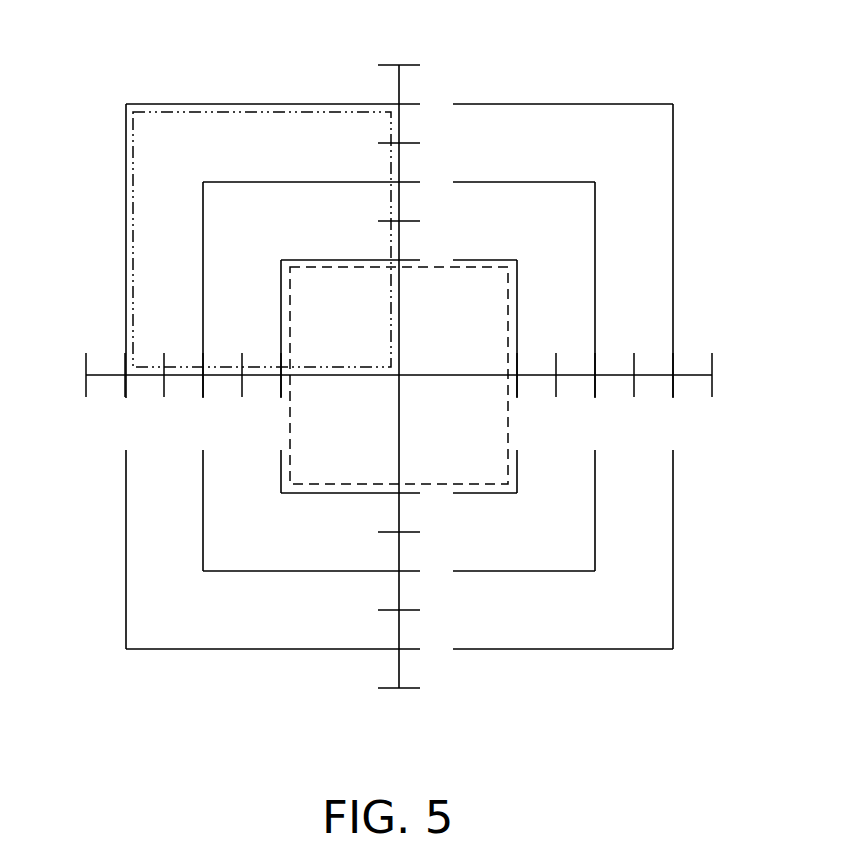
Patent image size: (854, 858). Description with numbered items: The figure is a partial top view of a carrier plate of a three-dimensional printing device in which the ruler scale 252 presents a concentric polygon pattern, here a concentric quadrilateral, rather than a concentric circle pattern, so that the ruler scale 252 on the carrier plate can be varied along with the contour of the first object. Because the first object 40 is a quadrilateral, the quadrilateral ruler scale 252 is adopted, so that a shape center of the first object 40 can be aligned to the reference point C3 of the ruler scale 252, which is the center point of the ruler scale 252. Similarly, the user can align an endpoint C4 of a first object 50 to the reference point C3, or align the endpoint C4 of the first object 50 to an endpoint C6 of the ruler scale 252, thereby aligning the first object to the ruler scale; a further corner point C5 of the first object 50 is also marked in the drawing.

The ruler scale 252 is at (648, 692).
The first object 40 is at (508, 293).
The first object 50 is at (213, 111).
The reference point C3 is at (399, 377).
The endpoint C4 is at (386, 357).
The corner point C5 is at (143, 117).
The endpoint C6 is at (127, 103).